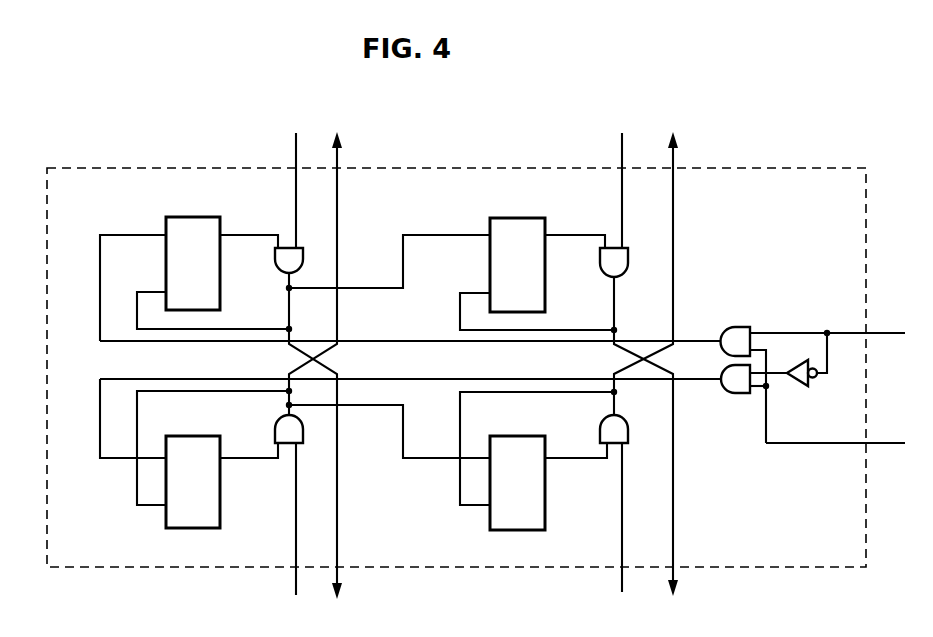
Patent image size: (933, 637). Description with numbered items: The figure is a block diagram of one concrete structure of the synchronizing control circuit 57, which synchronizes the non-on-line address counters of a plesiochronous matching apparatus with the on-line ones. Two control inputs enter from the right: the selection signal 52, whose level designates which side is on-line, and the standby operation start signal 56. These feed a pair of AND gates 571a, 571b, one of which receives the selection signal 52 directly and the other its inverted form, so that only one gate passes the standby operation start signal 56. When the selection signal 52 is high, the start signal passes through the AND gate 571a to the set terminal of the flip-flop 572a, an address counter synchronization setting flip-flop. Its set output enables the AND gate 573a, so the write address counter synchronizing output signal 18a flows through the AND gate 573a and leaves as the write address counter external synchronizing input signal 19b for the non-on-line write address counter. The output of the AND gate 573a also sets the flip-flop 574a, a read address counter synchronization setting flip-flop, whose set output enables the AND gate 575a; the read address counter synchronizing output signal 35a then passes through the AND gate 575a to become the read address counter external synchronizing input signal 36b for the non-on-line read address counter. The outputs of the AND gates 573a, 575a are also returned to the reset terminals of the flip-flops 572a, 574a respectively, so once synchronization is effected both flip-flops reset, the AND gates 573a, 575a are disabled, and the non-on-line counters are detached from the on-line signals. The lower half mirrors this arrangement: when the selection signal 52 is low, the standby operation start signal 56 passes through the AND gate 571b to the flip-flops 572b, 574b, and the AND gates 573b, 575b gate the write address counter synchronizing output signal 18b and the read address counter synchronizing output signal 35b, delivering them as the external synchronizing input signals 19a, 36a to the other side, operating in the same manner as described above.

The synchronizing control circuit 57 is at (757, 166).
The write address counter synchronizing output signal 18a is at (294, 180).
The write address counter synchronizing output signal 18b is at (294, 533).
The write address counter external synchronizing input signal 19a is at (321, 263).
The write address counter external synchronizing input signal 19b is at (322, 448).
The read address counter synchronizing output signal 35a is at (619, 180).
The read address counter synchronizing output signal 35b is at (626, 533).
The read address counter external synchronizing input signal 36a is at (651, 263).
The read address counter external synchronizing input signal 36b is at (655, 450).
The selection signal 52 is at (840, 334).
The standby operation start signal 56 is at (848, 444).
The AND gate 571a is at (722, 331).
The AND gate 571b is at (732, 396).
The flip-flop 572a is at (190, 217).
The flip-flop 572b is at (220, 505).
The AND gate 573a is at (275, 265).
The AND gate 573b is at (277, 427).
The flip-flop 574a is at (515, 218).
The flip-flop 574b is at (545, 505).
The AND gate 575a is at (600, 265).
The AND gate 575b is at (600, 424).